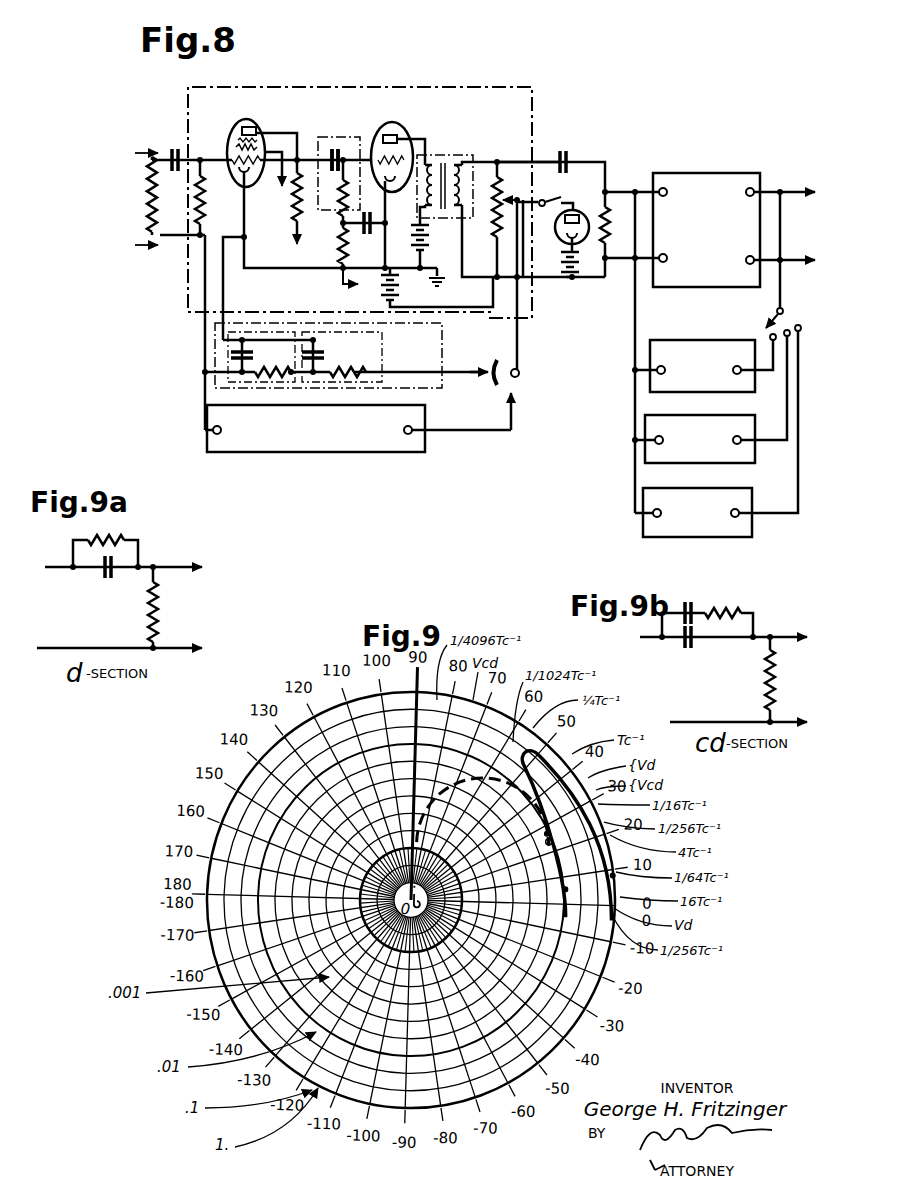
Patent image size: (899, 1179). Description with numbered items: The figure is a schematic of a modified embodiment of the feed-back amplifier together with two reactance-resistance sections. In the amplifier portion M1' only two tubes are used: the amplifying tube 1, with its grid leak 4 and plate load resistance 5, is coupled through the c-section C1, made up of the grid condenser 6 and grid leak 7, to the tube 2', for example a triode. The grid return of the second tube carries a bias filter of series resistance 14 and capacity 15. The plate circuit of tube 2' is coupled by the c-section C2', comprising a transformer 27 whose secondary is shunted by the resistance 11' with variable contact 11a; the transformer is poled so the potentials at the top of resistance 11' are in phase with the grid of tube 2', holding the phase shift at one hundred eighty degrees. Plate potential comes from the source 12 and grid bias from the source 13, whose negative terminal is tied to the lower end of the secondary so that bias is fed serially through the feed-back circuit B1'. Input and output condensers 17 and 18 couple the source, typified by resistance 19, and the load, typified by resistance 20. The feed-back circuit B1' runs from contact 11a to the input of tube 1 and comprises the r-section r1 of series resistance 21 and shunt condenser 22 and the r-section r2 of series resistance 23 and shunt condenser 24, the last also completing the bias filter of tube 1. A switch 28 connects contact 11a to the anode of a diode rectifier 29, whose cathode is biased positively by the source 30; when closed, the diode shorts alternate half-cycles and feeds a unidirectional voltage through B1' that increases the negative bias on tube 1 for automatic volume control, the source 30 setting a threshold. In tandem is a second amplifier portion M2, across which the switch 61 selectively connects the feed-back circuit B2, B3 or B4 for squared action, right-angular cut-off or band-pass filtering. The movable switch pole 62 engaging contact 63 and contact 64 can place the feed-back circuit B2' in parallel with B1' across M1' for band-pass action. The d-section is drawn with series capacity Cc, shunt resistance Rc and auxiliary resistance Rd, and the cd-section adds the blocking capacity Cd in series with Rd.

In FIG. 8, the resistance typifying earlier amplifier portion or source 19 is at (148, 165).
In FIG. 8, the input condenser 17 is at (174, 149).
In FIG. 8, the amplifying tube 1 is at (251, 121).
In FIG. 8, the grid leak 4 is at (205, 197).
In FIG. 8, the plate load resistance 5 is at (293, 206).
In FIG. 8, the grid condenser 6 is at (329, 155).
In FIG. 8, the c-section C1 is at (336, 137).
In FIG. 8, the grid leak 7 is at (340, 200).
In FIG. 8, the series resistance of bias filter 14 is at (339, 248).
In FIG. 8, the bias filter capacity 15 is at (366, 236).
In FIG. 8, the tube 2' is at (392, 181).
In FIG. 8, the transformer 27 is at (441, 162).
In FIG. 8, the c-section C2' is at (448, 168).
In FIG. 8, the transformer-secondary-shunting resistance 11' is at (508, 203).
In FIG. 8, the variable contact 11a is at (517, 190).
In FIG. 8, the output condenser 18 is at (569, 158).
In FIG. 8, the battery or current source 12 is at (426, 246).
In FIG. 8, the biasing battery or potential source 13 is at (398, 287).
In FIG. 8, the switch 28 is at (560, 198).
In FIG. 8, the diode rectifier 29 is at (558, 226).
In FIG. 8, the resistance typifying later amplifier portion or load 20 is at (610, 222).
In FIG. 8, the battery or potential source 30 is at (584, 272).
In FIG. 8, the amplifier portion M1' is at (362, 73).
In FIG. 8, the second amplifier portion M2 is at (700, 173).
In FIG. 8, the switch 61 is at (788, 325).
In FIG. 8, the second feed-back circuit B2 is at (702, 366).
In FIG. 8, the feed-back circuit B3 is at (700, 439).
In FIG. 8, the feed-back circuit B4 is at (697, 512).
In FIG. 8, the shunt condenser 24 is at (250, 356).
In FIG. 8, the shunt condenser 22 is at (320, 358).
In FIG. 8, the series resistance 21 is at (357, 358).
In FIG. 8, the r-section r2 is at (272, 378).
In FIG. 8, the series resistance 23 is at (293, 378).
In FIG. 8, the r-section r1 is at (350, 378).
In FIG. 8, the feed-back circuit B1' is at (342, 367).
In FIG. 8, the feed-back circuit B2' is at (337, 438).
In FIG. 8, the switch contact 63 is at (494, 368).
In FIG. 8, the movable switch pole 62 is at (521, 376).
In FIG. 8, the switch contact 64 is at (516, 398).
In FIG. 9A, the auxiliary resistance Rd is at (130, 540).
In FIG. 9B, the auxiliary resistance Rd is at (733, 606).
In FIG. 9A, the series capacity Cc is at (106, 580).
In FIG. 9B, the series capacity Cc is at (688, 650).
In FIG. 9A, the shunt resistance Rc is at (160, 608).
In FIG. 9B, the shunt resistance Rc is at (764, 675).
In FIG. 9B, the blocking or auxiliary capacity Cd is at (692, 602).